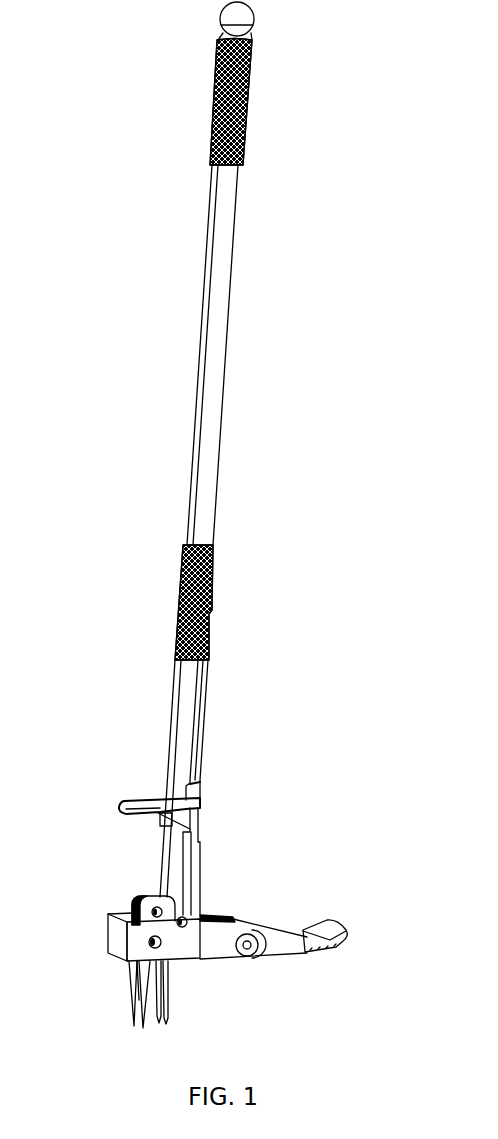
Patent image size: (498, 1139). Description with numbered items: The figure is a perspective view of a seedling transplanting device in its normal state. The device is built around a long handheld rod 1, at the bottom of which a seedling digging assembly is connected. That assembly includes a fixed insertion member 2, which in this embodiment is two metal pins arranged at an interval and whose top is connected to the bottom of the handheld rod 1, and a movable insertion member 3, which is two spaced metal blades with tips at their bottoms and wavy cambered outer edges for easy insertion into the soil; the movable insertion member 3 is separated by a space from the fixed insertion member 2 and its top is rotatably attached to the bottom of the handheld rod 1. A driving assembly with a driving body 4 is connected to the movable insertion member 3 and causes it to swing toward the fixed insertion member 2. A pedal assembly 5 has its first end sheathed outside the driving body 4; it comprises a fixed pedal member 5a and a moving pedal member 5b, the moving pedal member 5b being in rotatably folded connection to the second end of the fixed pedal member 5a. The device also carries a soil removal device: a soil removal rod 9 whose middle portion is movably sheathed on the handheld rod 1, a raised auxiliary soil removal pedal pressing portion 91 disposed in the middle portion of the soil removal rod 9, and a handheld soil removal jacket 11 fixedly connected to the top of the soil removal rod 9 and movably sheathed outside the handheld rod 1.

The handheld rod 1 is at (208, 494).
The handheld soil removal jacket 11 is at (212, 598).
The soil removal rod 9 is at (203, 752).
The raised auxiliary soil removal pedal pressing portion 91 is at (148, 801).
The driving body 4 is at (150, 896).
The movable insertion member 3 is at (133, 1006).
The fixed insertion member 2 is at (164, 1004).
The pedal assembly 5 is at (273, 890).
The fixed pedal member 5a is at (222, 915).
The moving pedal member 5b is at (267, 917).